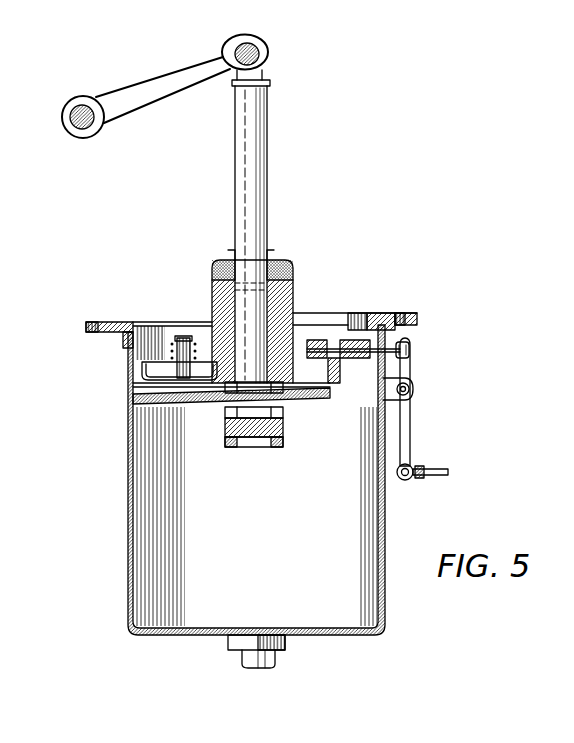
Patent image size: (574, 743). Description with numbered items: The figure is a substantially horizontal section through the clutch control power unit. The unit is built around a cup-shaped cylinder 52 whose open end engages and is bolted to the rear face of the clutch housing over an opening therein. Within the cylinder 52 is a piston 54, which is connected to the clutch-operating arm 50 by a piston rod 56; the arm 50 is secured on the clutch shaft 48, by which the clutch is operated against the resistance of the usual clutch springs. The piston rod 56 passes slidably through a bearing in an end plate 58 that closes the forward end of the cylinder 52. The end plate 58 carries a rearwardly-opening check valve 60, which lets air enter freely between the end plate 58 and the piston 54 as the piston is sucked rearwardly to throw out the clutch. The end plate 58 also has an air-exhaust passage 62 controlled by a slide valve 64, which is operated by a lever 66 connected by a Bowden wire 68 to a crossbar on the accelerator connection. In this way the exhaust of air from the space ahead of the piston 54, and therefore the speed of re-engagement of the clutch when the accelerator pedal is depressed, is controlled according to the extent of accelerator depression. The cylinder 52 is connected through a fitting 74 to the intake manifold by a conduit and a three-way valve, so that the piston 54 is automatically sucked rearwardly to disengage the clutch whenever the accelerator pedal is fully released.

The clutch shaft 48 is at (71, 127).
The arm 50 is at (146, 93).
The cup-shaped cylinder 52 is at (157, 557).
The piston 54 is at (315, 400).
The piston rod 56 is at (248, 185).
The end plate 58 is at (282, 322).
The check valve 60 is at (178, 356).
The air-exhaust passage 62 is at (331, 350).
The slide valve 64 is at (385, 343).
The lever 66 is at (407, 437).
The Bowden wire 68 is at (437, 470).
The fitting 74 is at (250, 660).